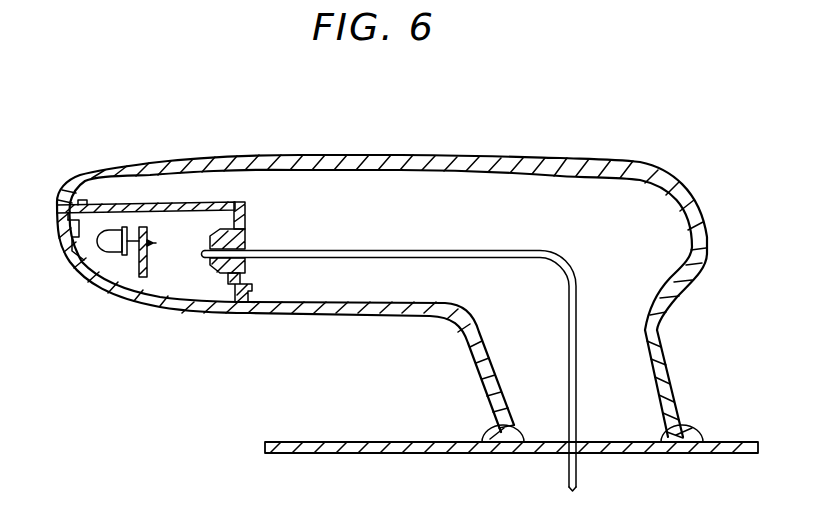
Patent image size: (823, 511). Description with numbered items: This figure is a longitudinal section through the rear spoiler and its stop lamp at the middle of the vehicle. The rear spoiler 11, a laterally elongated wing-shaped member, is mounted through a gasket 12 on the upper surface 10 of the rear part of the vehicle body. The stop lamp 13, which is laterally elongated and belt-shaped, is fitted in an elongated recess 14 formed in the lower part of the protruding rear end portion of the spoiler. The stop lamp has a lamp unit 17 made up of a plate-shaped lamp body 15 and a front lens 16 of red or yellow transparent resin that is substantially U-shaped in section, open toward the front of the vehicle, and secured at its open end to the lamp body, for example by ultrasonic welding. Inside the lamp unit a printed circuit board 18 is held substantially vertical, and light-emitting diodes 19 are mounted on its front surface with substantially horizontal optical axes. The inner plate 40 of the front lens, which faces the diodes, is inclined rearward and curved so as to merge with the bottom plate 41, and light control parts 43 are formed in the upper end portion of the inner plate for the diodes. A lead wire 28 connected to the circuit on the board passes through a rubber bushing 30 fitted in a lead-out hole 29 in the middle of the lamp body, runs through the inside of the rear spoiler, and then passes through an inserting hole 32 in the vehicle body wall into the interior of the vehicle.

The upper surface of the rear part of the vehicle body 10 is at (733, 443).
The rear spoiler 11 is at (566, 160).
The gasket 12 is at (686, 428).
The stop lamp 13 is at (133, 353).
The elongated recess 14 is at (64, 218).
The lamp body 15 is at (250, 203).
The front lens 16 is at (203, 207).
The lamp unit 17 is at (260, 117).
The printed circuit board 18 is at (147, 265).
The light-emitting diodes 19 is at (107, 238).
The lead wire 28 is at (362, 250).
The lead-wire lead-out hole 29 is at (248, 264).
The rubber bushing 30 is at (247, 238).
The inserting hole 32 is at (580, 452).
The inner plate 40 is at (88, 262).
The bottom plate 41 is at (204, 296).
The light control parts 43 is at (75, 240).